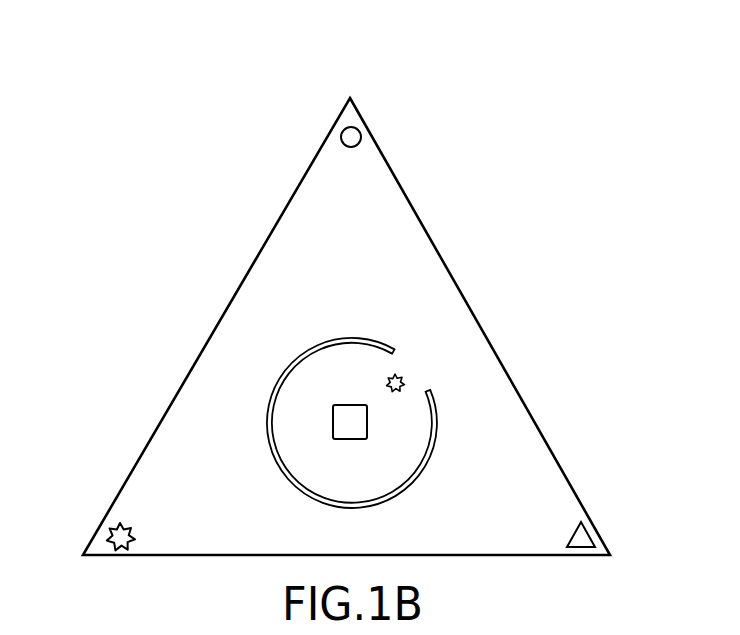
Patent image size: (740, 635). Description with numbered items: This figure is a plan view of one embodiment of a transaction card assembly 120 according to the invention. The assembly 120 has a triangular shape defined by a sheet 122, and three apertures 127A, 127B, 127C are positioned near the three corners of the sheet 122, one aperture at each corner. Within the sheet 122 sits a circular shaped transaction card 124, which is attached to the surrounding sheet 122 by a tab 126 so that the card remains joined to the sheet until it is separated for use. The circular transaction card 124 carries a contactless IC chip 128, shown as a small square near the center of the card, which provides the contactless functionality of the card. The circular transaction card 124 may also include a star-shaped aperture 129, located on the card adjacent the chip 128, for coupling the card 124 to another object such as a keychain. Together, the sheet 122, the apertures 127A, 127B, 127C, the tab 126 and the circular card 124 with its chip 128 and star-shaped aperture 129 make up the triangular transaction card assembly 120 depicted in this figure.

The transaction card assembly 120 is at (350, 92).
The sheet 122 is at (498, 352).
The transaction card 124 is at (352, 352).
The tab 126 is at (418, 380).
The aperture 127A is at (351, 148).
The aperture 127B is at (569, 534).
The aperture 127C is at (135, 535).
The contactless IC chip 128 is at (348, 440).
The star-shaped aperture 129 is at (384, 385).